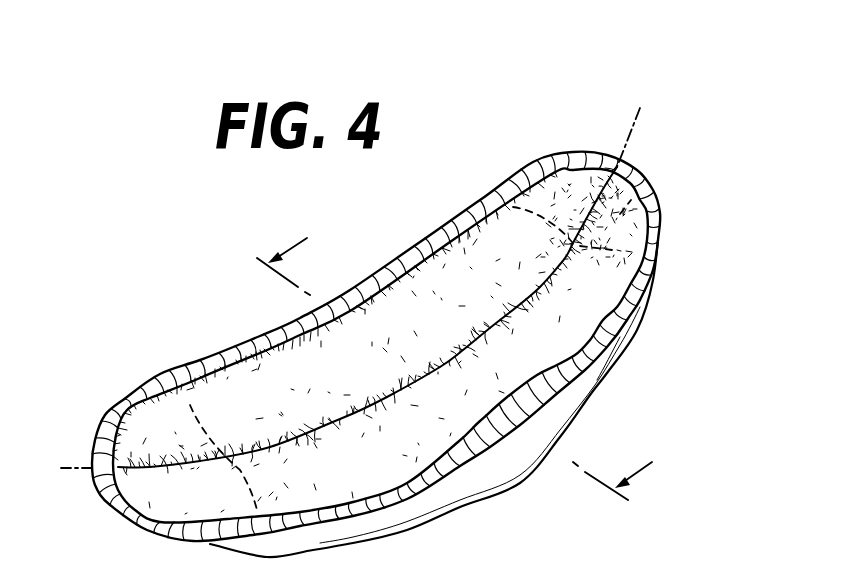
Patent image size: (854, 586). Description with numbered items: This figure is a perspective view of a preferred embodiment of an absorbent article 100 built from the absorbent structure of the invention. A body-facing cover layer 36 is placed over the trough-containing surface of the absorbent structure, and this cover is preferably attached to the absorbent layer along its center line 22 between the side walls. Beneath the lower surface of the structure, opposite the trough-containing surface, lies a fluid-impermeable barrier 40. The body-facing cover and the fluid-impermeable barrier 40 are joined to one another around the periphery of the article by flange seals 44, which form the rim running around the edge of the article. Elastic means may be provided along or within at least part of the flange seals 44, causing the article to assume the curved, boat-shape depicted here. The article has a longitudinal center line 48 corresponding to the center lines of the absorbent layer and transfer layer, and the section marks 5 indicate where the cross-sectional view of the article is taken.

The absorbent article 100 is at (570, 112).
The absorbent layer center line 22 is at (637, 125).
The body-facing cover layer 36 is at (617, 223).
The fluid-impermeable barrier 40 is at (592, 410).
The flange seals 44 is at (172, 372).
The longitudinal center line 48 is at (388, 398).
The section line of FIG. 5 is at (444, 377).